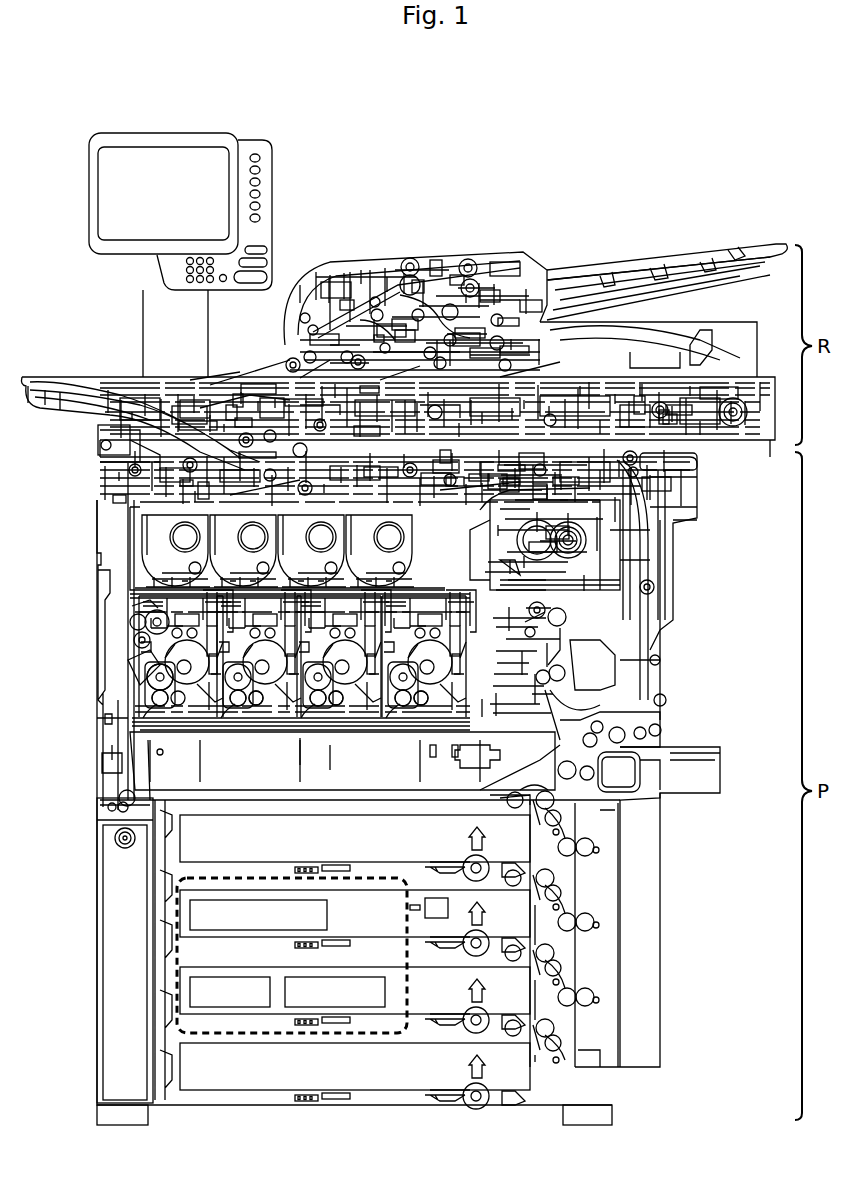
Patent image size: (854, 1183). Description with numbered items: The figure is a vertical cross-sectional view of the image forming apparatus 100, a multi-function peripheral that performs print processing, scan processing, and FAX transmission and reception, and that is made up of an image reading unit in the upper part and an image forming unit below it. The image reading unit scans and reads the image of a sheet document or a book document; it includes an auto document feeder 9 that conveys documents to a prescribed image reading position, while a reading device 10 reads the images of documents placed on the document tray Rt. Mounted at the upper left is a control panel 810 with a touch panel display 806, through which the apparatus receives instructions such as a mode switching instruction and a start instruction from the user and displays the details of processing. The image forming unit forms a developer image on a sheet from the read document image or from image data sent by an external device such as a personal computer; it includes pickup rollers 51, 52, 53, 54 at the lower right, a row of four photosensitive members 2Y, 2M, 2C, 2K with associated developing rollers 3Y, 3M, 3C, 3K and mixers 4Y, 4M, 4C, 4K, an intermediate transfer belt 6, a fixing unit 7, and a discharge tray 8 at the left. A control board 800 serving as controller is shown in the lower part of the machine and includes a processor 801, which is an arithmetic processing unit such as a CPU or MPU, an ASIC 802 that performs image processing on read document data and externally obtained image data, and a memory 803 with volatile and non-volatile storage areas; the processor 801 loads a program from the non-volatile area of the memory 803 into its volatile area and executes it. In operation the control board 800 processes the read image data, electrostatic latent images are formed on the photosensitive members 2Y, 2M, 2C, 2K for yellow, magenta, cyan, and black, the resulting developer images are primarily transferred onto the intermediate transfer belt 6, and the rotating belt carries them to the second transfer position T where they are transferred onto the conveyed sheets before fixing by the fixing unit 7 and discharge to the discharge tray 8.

The image forming apparatus 100 is at (607, 150).
The control panel 810 is at (118, 133).
The touch panel display 806 is at (112, 193).
The auto document feeder 9 is at (310, 272).
The document tray Rt is at (668, 262).
The reading device 10 is at (283, 367).
The discharge tray 8 is at (112, 386).
The photosensitive member 2Y is at (182, 636).
The photosensitive member 2M is at (266, 636).
The photosensitive member 2C is at (348, 636).
The photosensitive member 2K is at (426, 636).
The developing roller 3Y is at (150, 679).
The mixer 4Y is at (160, 706).
The developing roller 3M is at (237, 707).
The mixer 4M is at (250, 706).
The developing roller 3C is at (318, 707).
The mixer 4C is at (335, 706).
The developing roller 3K is at (403, 707).
The mixer 4K is at (420, 706).
The intermediate transfer belt 6 is at (475, 595).
The fixing unit 7 is at (590, 538).
The second transfer position T is at (577, 620).
The pickup roller 51 is at (506, 815).
The pickup roller 52 is at (508, 890).
The pickup roller 53 is at (506, 967).
The pickup roller 54 is at (504, 1043).
The control board 800 is at (407, 985).
The processor 801 is at (330, 912).
The ASIC 802 is at (220, 1008).
The memory 803 is at (318, 1008).